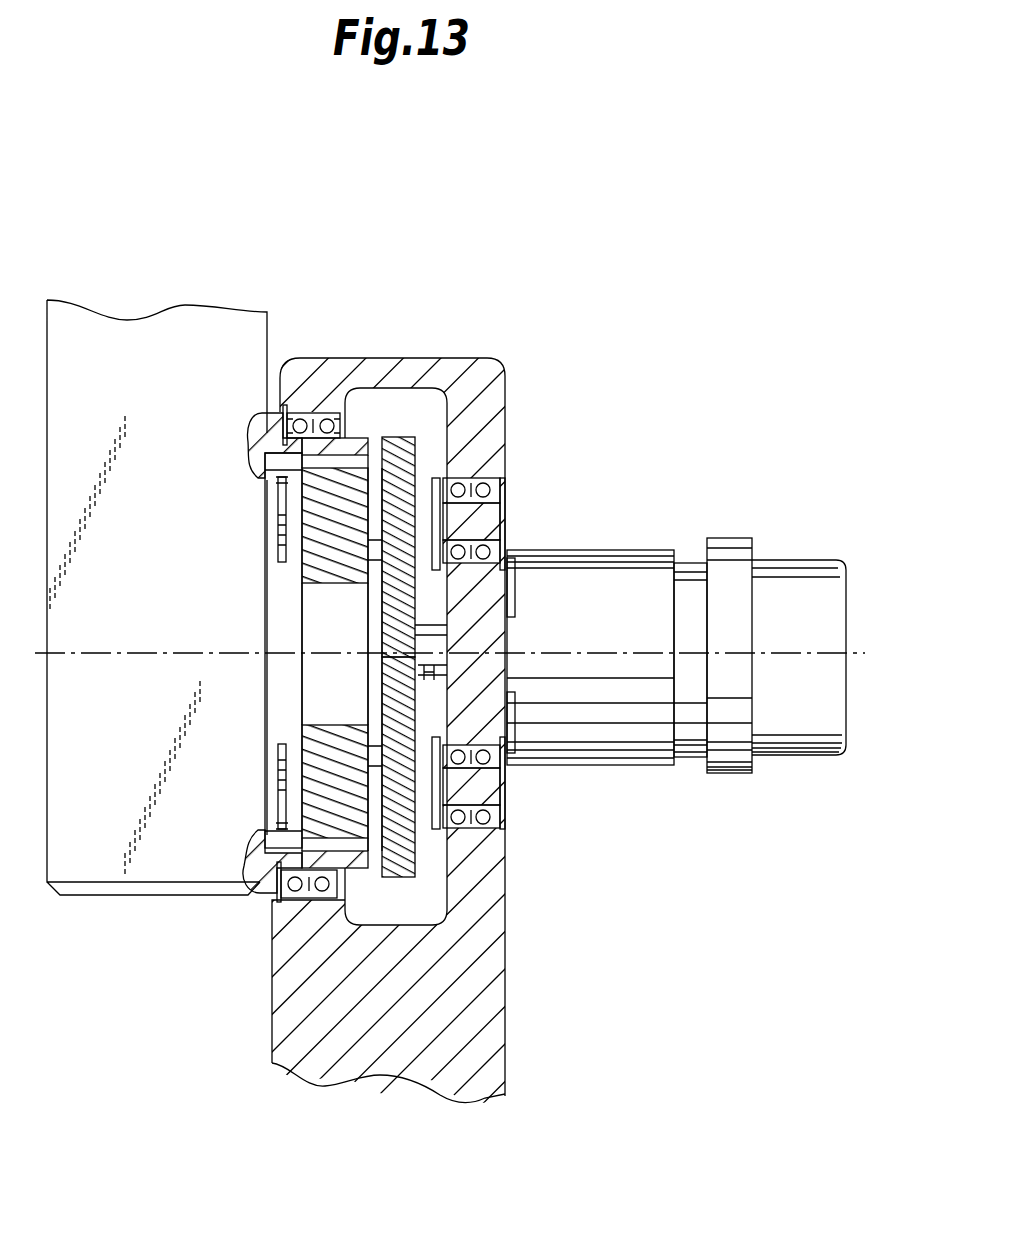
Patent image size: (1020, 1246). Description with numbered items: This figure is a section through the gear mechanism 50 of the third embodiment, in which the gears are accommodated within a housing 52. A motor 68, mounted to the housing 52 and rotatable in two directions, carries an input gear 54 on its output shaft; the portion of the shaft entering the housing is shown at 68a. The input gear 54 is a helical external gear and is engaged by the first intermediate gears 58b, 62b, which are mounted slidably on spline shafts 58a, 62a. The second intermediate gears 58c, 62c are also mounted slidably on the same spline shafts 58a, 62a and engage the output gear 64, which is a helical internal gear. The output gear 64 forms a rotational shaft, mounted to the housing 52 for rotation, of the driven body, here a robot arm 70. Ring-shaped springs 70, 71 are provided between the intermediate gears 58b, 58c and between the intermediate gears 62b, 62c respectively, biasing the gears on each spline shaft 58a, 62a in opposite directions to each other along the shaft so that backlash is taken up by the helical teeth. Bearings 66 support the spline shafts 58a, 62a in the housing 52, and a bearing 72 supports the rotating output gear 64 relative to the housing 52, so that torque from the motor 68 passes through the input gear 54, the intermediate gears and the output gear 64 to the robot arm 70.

The gear mechanism 50 is at (382, 270).
The housing 52 is at (508, 385).
The input gear 54 is at (385, 633).
The spline shaft 58a is at (505, 525).
The first intermediate gear 58b is at (418, 440).
The second intermediate gear 58c is at (292, 502).
The spline shaft 62a is at (505, 795).
The first intermediate gear 62b is at (382, 877).
The second intermediate gear 62c is at (292, 838).
The output gear 64 is at (361, 438).
The bearings 66 is at (505, 492).
The motor 68 is at (795, 560).
The output shaft end portion 68a is at (447, 630).
The spring 70 is at (180, 302).
The spring 71 is at (370, 740).
The bearing 72 is at (301, 412).